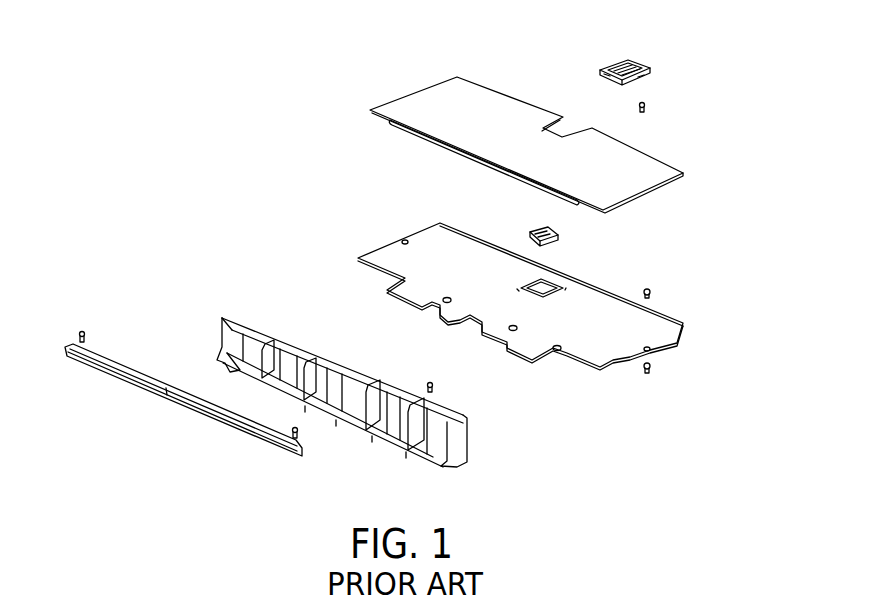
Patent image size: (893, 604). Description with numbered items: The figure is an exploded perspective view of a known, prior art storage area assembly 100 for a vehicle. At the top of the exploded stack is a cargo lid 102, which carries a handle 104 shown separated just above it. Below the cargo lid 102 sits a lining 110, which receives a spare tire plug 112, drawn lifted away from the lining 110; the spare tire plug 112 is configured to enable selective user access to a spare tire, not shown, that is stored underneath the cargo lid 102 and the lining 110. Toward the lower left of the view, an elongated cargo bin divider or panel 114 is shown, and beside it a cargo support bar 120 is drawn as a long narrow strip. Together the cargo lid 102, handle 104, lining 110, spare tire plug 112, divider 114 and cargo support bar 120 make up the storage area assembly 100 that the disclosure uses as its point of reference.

The storage area assembly 100 is at (245, 126).
The cargo lid 102 is at (673, 172).
The handle 104 is at (628, 62).
The lining 110 is at (666, 327).
The spare tire plug 112 is at (555, 240).
The cargo bin divider or panel 114 is at (232, 338).
The cargo support bar 120 is at (138, 382).